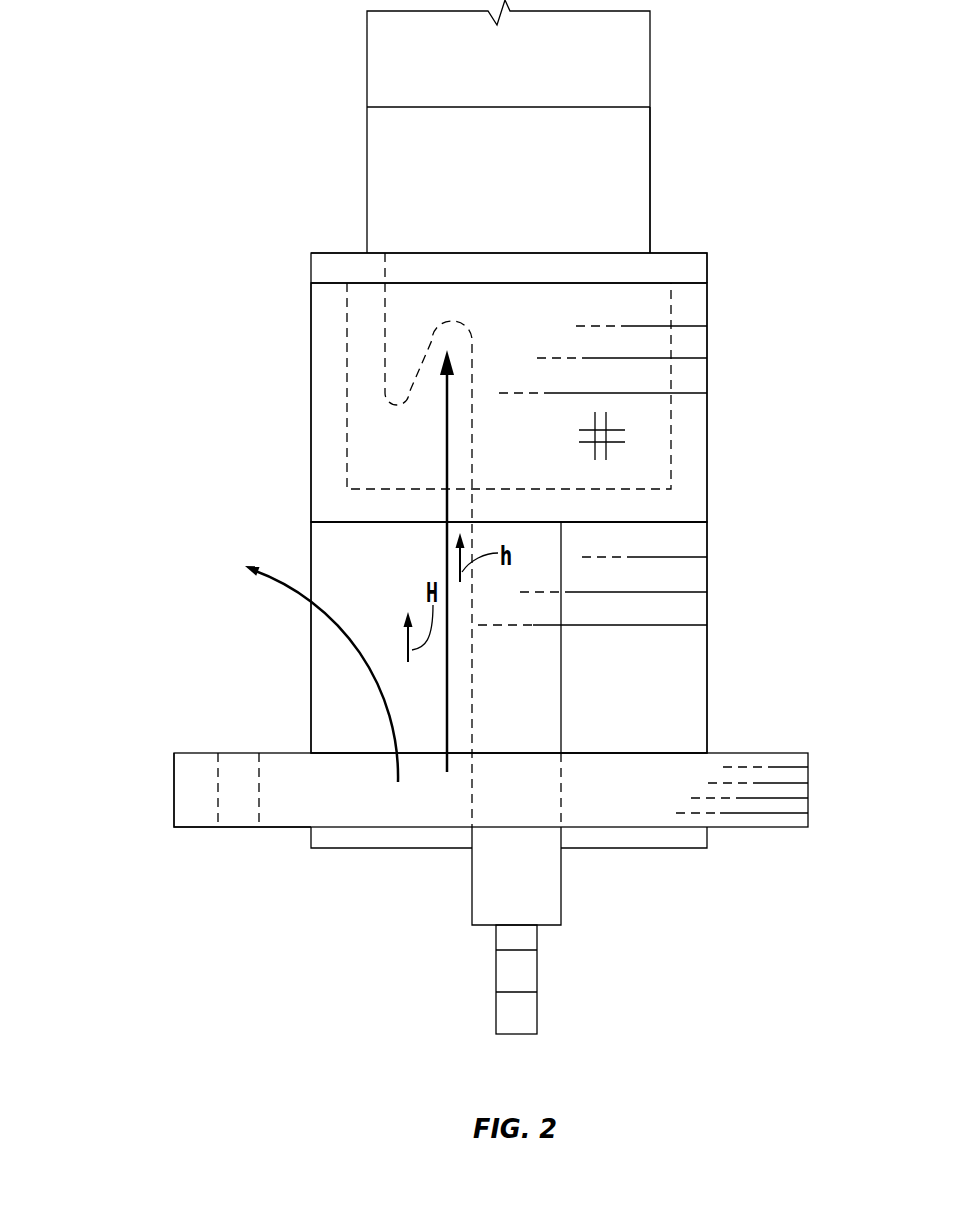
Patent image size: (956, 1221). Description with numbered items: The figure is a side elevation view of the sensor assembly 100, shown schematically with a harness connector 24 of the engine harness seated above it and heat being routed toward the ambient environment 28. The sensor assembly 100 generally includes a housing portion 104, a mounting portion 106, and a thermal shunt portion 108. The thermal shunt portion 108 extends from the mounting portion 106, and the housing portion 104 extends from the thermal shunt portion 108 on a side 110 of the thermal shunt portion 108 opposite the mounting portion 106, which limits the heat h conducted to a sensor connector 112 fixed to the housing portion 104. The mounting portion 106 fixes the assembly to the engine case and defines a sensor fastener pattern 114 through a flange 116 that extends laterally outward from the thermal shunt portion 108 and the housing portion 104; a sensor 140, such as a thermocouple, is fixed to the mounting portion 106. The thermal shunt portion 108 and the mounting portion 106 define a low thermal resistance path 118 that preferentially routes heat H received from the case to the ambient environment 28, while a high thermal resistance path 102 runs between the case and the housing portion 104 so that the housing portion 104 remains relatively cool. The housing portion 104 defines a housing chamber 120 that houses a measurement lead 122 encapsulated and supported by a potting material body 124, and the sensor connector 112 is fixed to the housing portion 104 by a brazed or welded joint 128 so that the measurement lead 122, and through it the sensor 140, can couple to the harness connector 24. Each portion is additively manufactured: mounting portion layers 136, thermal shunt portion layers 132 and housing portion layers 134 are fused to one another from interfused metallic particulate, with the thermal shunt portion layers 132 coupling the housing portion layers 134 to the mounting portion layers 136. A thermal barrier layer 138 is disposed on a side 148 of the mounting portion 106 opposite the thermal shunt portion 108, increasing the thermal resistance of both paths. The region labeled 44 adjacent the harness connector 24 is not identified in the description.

The harness connector 24 is at (474, 80).
The ambient environment 28 is at (251, 39).
The conduit wall 44 is at (615, 142).
The sensor assembly 100 is at (188, 1010).
The high thermal resistance path 102 is at (360, 650).
The housing portion 104 is at (214, 406).
The mounting portion 106 is at (129, 809).
The thermal shunt portion 108 is at (197, 632).
The side 110 is at (253, 513).
The sensor connector 112 is at (262, 168).
The sensor fastener pattern 114 is at (259, 805).
The flange 116 is at (197, 828).
The low thermal resistance path 118 is at (447, 465).
The housing chamber 120 is at (672, 465).
The measurement lead 122 is at (385, 333).
The potting material body 124 is at (612, 442).
The brazed or welded joint 128 is at (670, 267).
The thermal shunt portion layers 132 is at (690, 557).
The housing portion layers 134 is at (690, 326).
The mounting portion layers 136 is at (773, 767).
The thermal barrier layer 138 is at (617, 848).
The sensor 140 is at (491, 880).
The side 148 is at (741, 903).